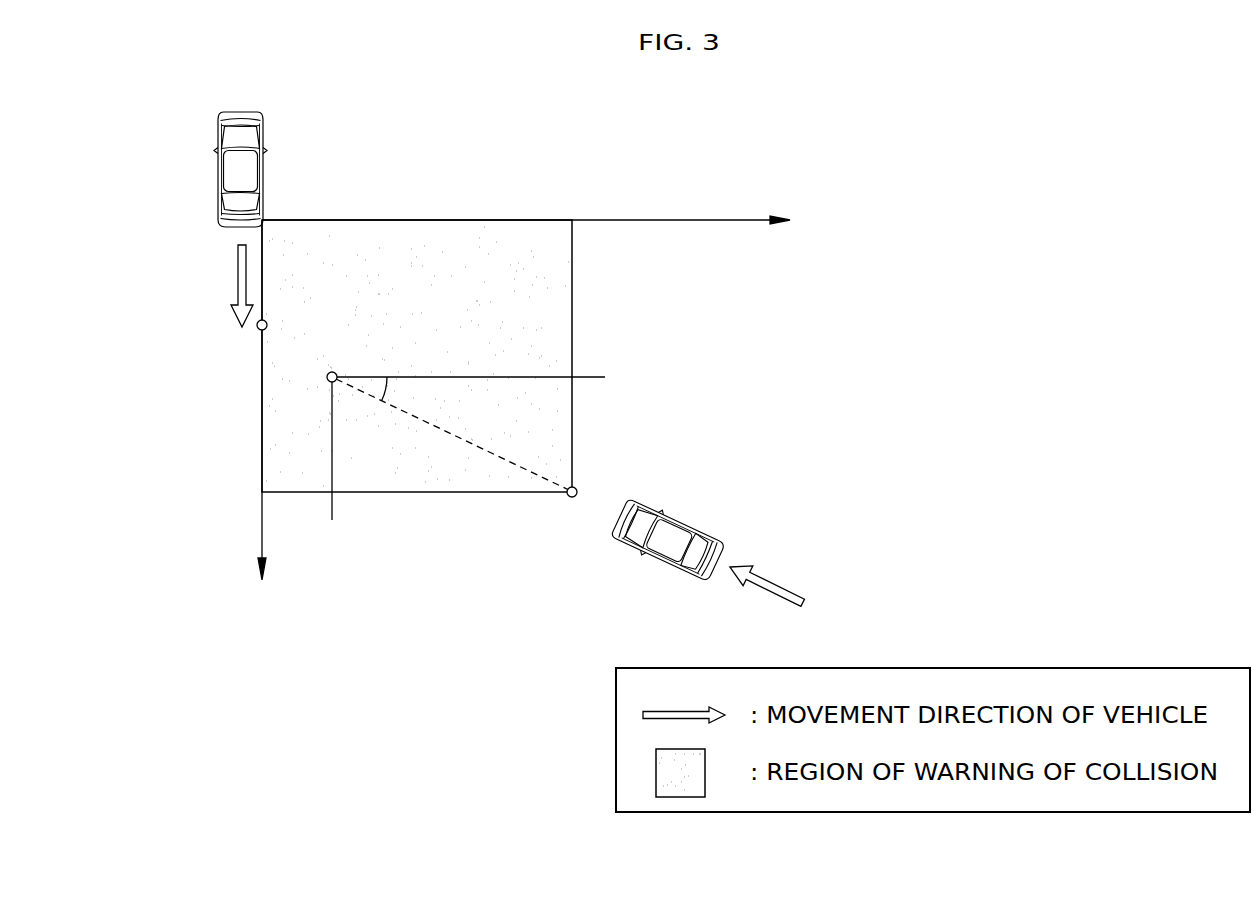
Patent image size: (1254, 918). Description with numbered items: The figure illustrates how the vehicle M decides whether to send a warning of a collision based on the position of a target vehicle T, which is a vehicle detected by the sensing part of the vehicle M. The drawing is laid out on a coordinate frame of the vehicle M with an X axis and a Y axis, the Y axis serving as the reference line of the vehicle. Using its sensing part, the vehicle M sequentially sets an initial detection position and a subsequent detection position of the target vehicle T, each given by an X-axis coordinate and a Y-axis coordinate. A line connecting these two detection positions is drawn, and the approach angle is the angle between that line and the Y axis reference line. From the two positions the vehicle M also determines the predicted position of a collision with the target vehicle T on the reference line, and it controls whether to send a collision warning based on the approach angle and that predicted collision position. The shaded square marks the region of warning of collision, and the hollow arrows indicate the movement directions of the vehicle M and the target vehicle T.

The vehicle M is at (263, 140).
The target vehicle T is at (680, 535).
The X-axis X is at (262, 413).
The Y-axis Y is at (536, 223).